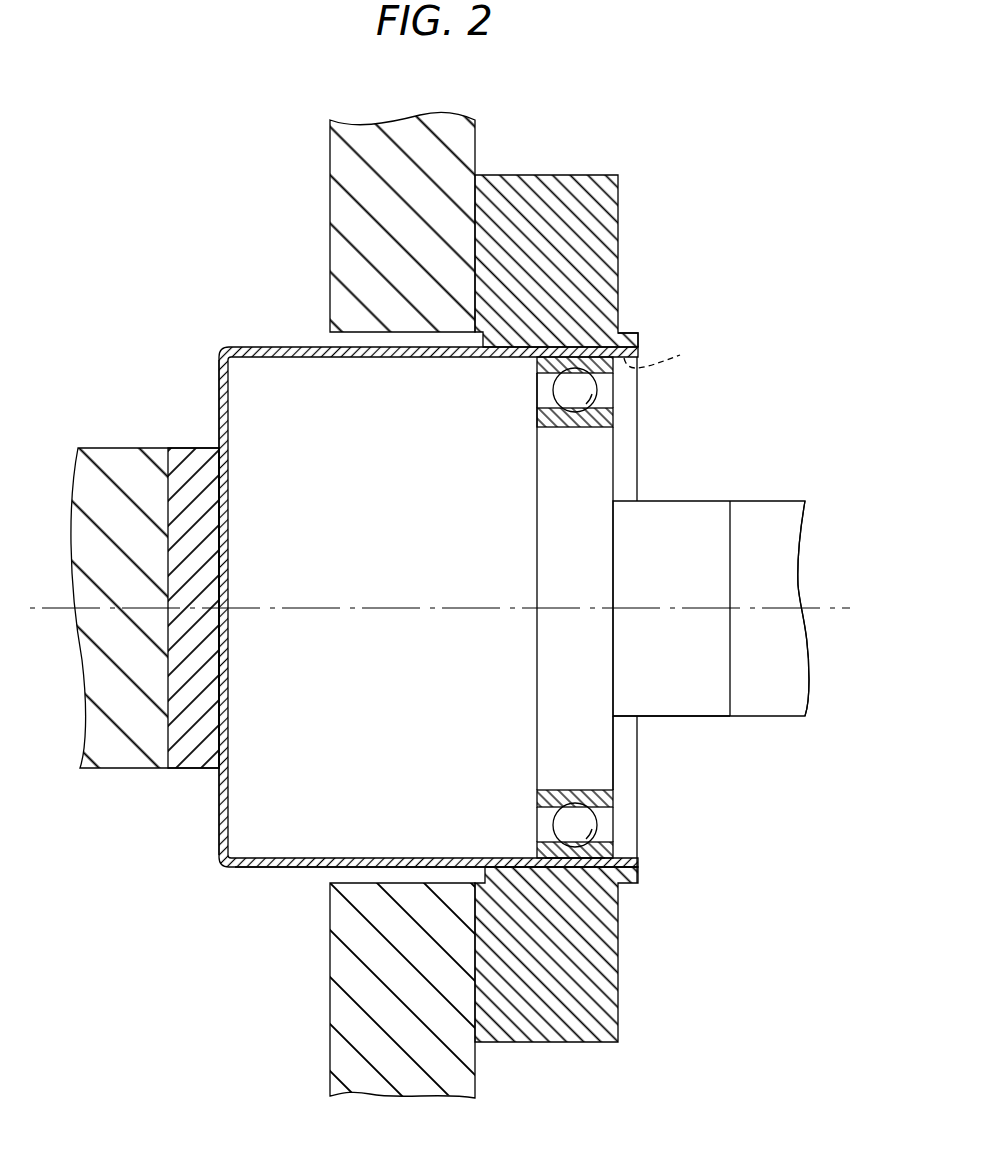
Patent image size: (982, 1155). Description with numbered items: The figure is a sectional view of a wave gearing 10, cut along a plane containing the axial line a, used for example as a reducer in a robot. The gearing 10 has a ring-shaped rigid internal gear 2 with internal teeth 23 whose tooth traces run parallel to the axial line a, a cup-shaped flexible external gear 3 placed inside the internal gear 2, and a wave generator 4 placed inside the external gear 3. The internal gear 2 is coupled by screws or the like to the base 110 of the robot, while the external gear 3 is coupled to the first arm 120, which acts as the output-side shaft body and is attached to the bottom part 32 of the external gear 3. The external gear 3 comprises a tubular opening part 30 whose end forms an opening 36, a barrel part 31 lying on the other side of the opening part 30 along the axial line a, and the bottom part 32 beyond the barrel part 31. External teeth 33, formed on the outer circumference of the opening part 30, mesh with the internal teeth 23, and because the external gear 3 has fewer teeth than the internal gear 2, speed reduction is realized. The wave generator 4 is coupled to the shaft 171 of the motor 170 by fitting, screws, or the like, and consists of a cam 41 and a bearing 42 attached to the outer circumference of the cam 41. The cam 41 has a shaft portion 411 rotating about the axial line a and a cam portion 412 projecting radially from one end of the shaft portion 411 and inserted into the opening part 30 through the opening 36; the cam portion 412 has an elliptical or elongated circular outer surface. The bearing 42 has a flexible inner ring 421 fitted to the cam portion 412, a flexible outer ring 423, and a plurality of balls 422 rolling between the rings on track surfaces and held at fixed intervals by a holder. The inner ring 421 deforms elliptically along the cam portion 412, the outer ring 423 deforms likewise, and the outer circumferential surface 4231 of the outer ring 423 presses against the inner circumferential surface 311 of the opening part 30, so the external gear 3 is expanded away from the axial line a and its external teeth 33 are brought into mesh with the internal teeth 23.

The gearing 10 is at (727, 172).
The base 110 is at (399, 132).
The first arm 120 is at (108, 460).
The internal gear 2 is at (596, 172).
The internal teeth 23 is at (668, 357).
The external teeth 33 is at (615, 318).
The external gear 3 is at (243, 345).
The barrel part 31 is at (235, 870).
The inner circumferential surface 311 is at (535, 838).
The bottom part 32 is at (218, 400).
The opening part 30 is at (627, 450).
The opening 36 is at (638, 408).
The wave generator 4 is at (697, 497).
The motor 170 is at (747, 497).
The shaft 171 is at (787, 520).
The cam 41 is at (726, 755).
The shaft portion 411 is at (675, 717).
The cam portion 412 is at (615, 772).
The bearing 42 is at (667, 869).
The inner ring 421 is at (590, 796).
The balls 422 is at (588, 828).
The outer ring 423 is at (590, 852).
The outer circumferential surface 4231 is at (566, 868).
The axial line a is at (37, 603).